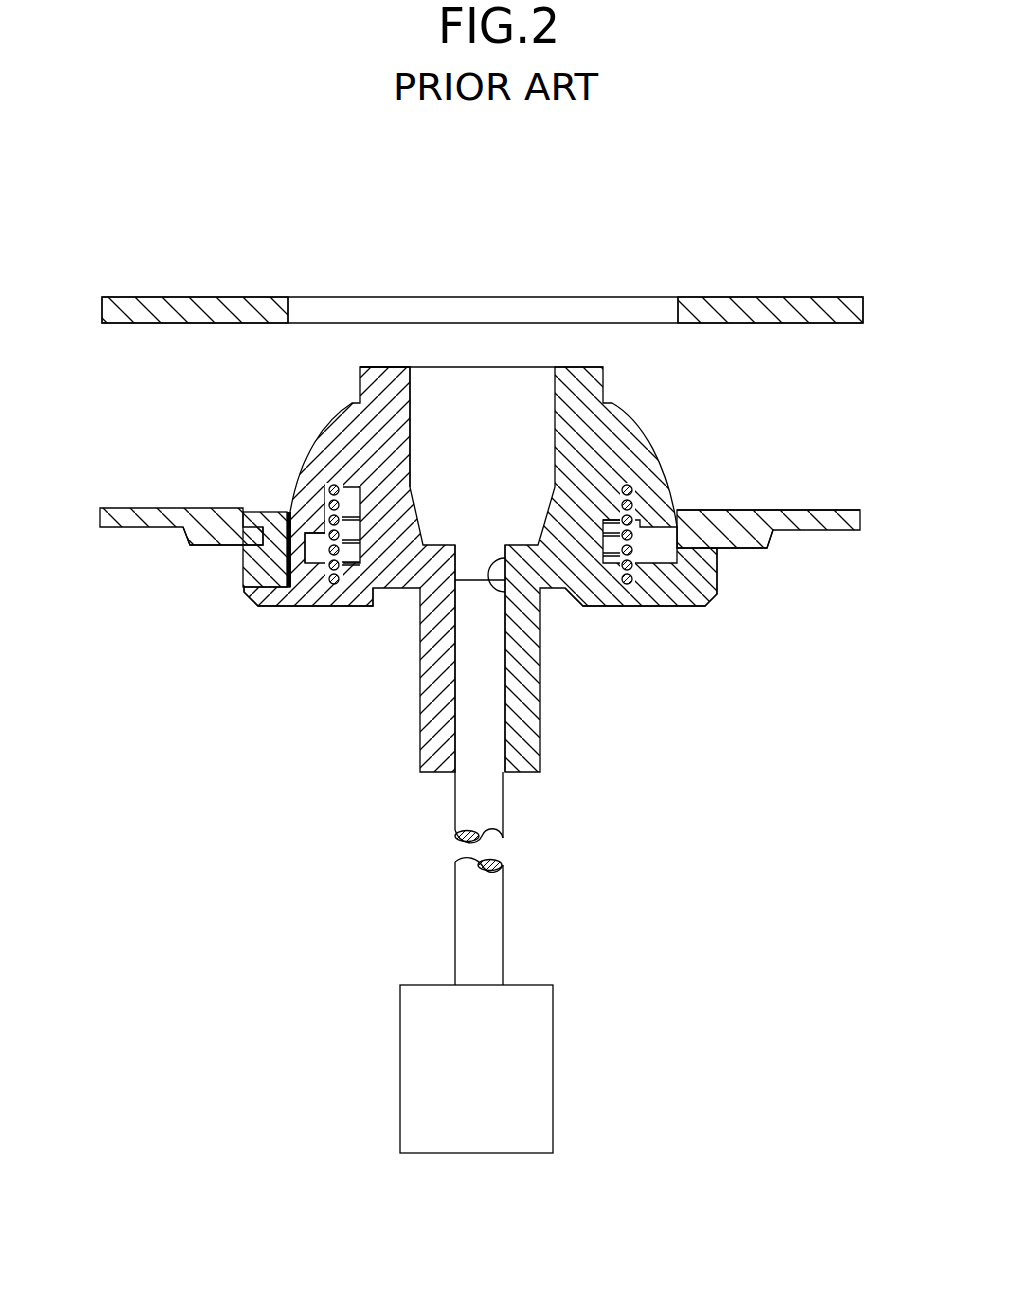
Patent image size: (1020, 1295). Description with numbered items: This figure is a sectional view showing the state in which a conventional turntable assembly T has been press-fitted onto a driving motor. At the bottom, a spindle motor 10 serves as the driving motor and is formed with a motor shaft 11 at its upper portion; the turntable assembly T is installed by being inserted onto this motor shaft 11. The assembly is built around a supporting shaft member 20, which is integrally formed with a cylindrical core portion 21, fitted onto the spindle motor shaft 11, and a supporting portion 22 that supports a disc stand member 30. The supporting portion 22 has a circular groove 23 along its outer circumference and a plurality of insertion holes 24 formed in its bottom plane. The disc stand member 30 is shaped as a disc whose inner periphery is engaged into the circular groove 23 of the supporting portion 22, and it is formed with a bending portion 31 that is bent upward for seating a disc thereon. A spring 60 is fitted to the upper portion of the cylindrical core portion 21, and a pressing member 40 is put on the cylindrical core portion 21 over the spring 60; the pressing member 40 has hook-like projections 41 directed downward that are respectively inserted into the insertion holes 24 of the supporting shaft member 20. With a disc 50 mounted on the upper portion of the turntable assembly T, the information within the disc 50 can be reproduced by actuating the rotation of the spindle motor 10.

The spindle motor 10 is at (567, 1038).
The motor shaft 11 is at (490, 823).
The supporting shaft member 20 is at (610, 388).
The cylindrical core portion 21 is at (385, 388).
The supporting portion 22 is at (250, 590).
The circular groove 23 is at (260, 573).
The insertion holes 24 is at (317, 597).
The disc stand member 30 is at (113, 505).
The bending portion 31 is at (187, 534).
The pressing member 40 is at (322, 488).
The hook-like projections 41 is at (297, 593).
The disc 50 is at (757, 308).
The spring 60 is at (635, 500).
The turntable assembly T is at (820, 463).